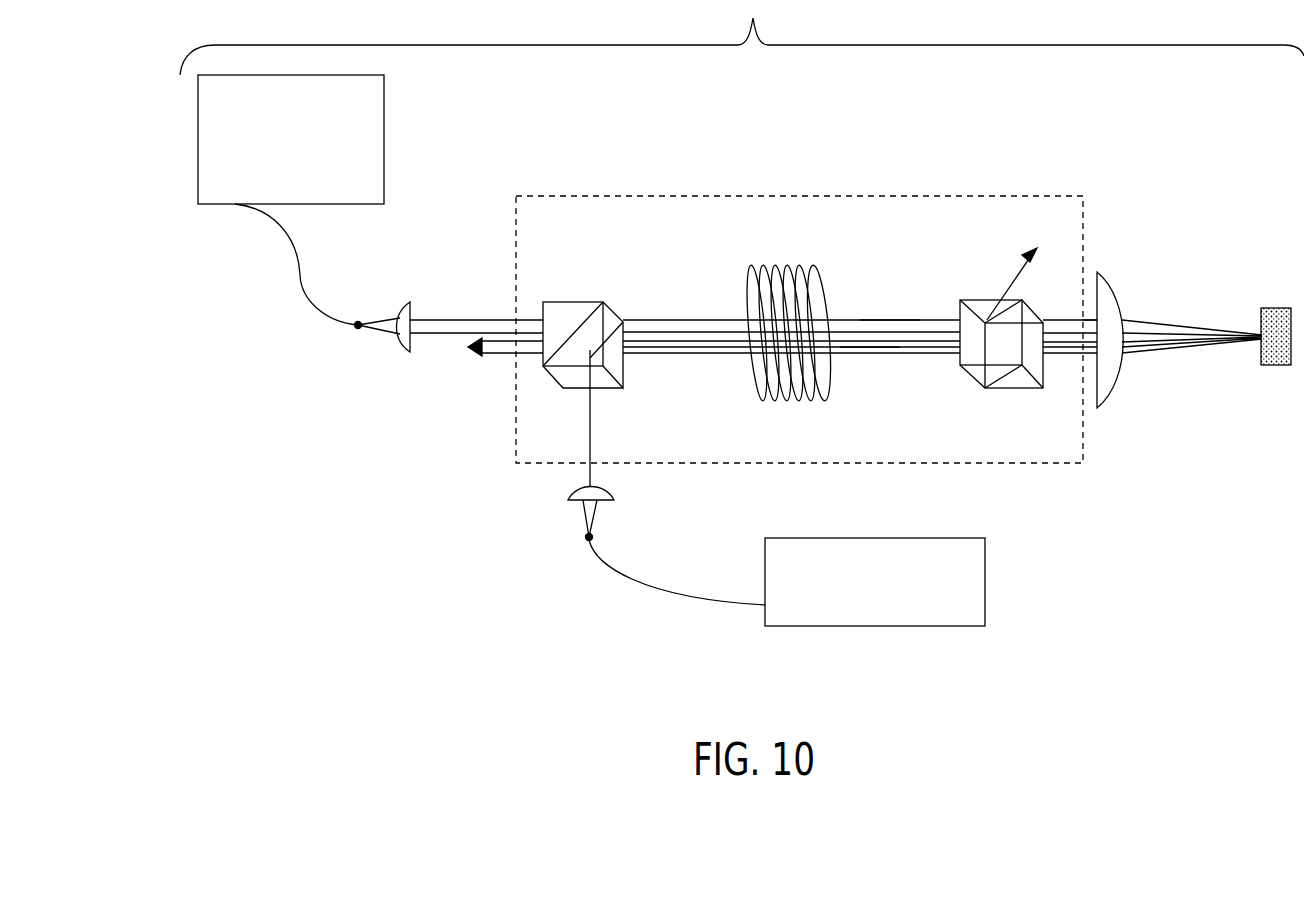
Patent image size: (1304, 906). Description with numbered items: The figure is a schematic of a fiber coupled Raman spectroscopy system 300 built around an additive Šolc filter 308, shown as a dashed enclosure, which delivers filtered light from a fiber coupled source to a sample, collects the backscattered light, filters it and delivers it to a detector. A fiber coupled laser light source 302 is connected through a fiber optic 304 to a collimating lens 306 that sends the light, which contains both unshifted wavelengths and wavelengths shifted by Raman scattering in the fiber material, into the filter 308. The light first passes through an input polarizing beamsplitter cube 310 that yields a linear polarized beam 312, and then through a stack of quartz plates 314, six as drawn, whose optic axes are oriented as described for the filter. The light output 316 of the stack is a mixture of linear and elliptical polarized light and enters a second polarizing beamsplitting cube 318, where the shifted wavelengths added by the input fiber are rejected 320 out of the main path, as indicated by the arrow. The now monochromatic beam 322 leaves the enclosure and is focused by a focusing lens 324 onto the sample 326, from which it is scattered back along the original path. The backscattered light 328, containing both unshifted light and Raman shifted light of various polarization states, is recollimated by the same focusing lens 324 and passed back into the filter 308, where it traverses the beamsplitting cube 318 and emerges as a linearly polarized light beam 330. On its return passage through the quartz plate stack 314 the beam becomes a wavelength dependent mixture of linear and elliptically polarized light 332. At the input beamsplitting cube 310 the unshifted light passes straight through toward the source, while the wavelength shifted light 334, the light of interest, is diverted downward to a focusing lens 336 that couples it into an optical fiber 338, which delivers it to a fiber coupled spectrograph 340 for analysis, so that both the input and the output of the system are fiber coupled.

The spectroscopy system 300 is at (742, 37).
The light source 302 is at (385, 140).
The fiber optic 304 is at (300, 278).
The collimating lens 306 is at (402, 300).
The additive Šolc filter 308 is at (835, 195).
The input polarizing beamsplitter cube 310 is at (576, 300).
The linear polarized beam 312 is at (670, 318).
The stack of quartz plates 314 is at (822, 265).
The light output 316 is at (894, 318).
The second polarizing beamsplitting cube 318 is at (1023, 390).
The rejected light 320 is at (1008, 298).
The monochromatic beam 322 is at (1085, 318).
The focusing lens 324 is at (1115, 290).
The sample 326 is at (1278, 367).
The backscattered light 328 is at (1163, 352).
The linearly polarized light beam 330 is at (908, 356).
The mixture of linear and elliptically polarized light 332 is at (668, 356).
The wavelength shifted light 334 is at (595, 410).
The focusing lens 336 is at (570, 494).
The optical fiber 338 is at (658, 592).
The spectrograph 340 is at (985, 580).